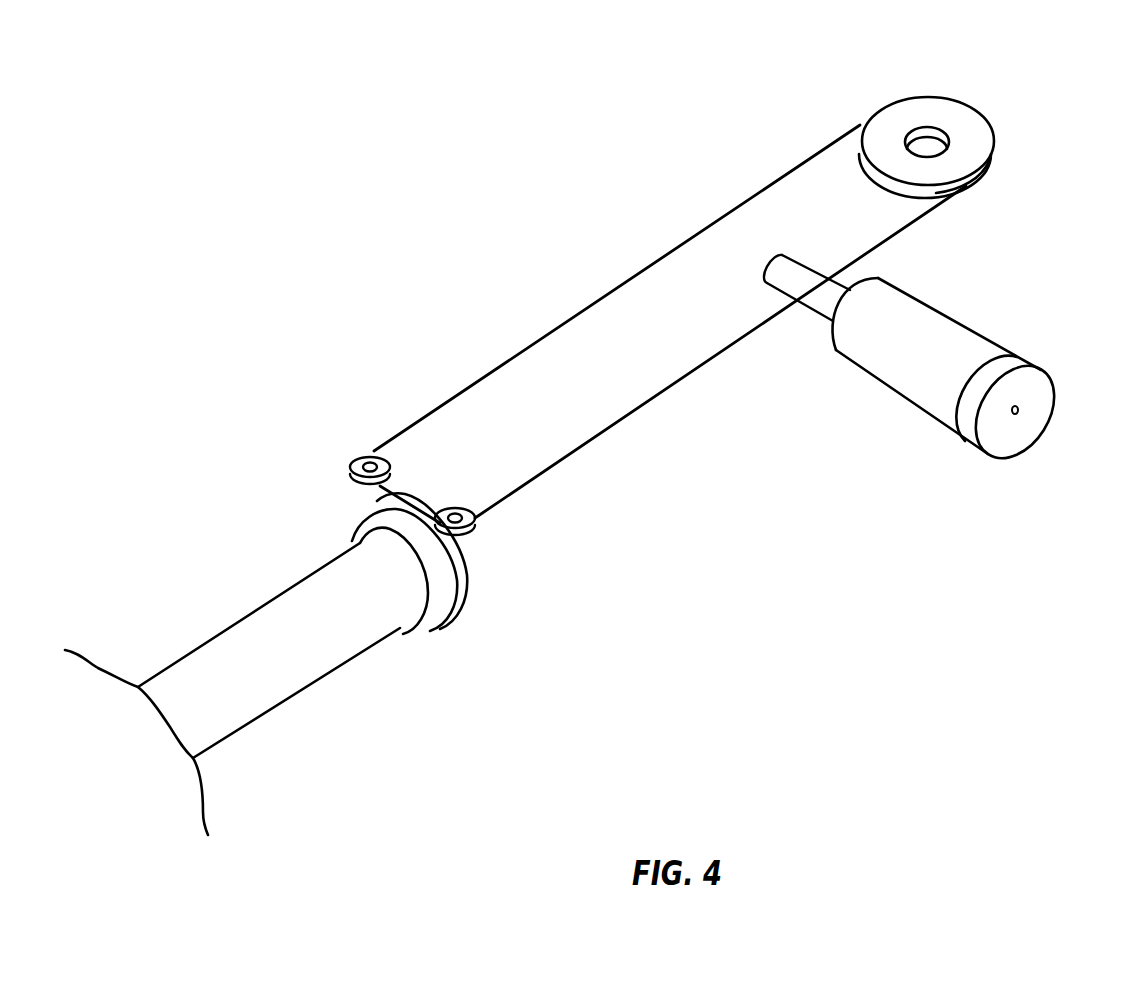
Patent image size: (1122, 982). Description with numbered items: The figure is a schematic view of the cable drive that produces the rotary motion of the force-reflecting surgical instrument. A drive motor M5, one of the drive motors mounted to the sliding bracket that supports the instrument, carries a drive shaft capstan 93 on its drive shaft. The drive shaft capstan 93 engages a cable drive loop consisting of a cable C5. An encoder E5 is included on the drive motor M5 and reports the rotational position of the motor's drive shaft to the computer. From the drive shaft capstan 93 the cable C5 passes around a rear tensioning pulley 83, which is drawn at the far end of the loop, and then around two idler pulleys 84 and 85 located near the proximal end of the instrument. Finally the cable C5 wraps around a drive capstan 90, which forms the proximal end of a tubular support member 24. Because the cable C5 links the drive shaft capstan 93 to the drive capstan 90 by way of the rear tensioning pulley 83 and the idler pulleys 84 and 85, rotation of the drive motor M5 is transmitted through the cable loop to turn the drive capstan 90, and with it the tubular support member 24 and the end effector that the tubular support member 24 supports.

The tubular support member 24 is at (237, 637).
The drive capstan 90 is at (460, 590).
The idler pulley 84 is at (358, 458).
The idler pulley 85 is at (466, 508).
The cable C5 is at (500, 362).
The rear tensioning pulley 83 is at (971, 118).
The drive shaft capstan 93 is at (826, 309).
The drive motor M5 is at (963, 337).
The encoder E5 is at (1040, 400).